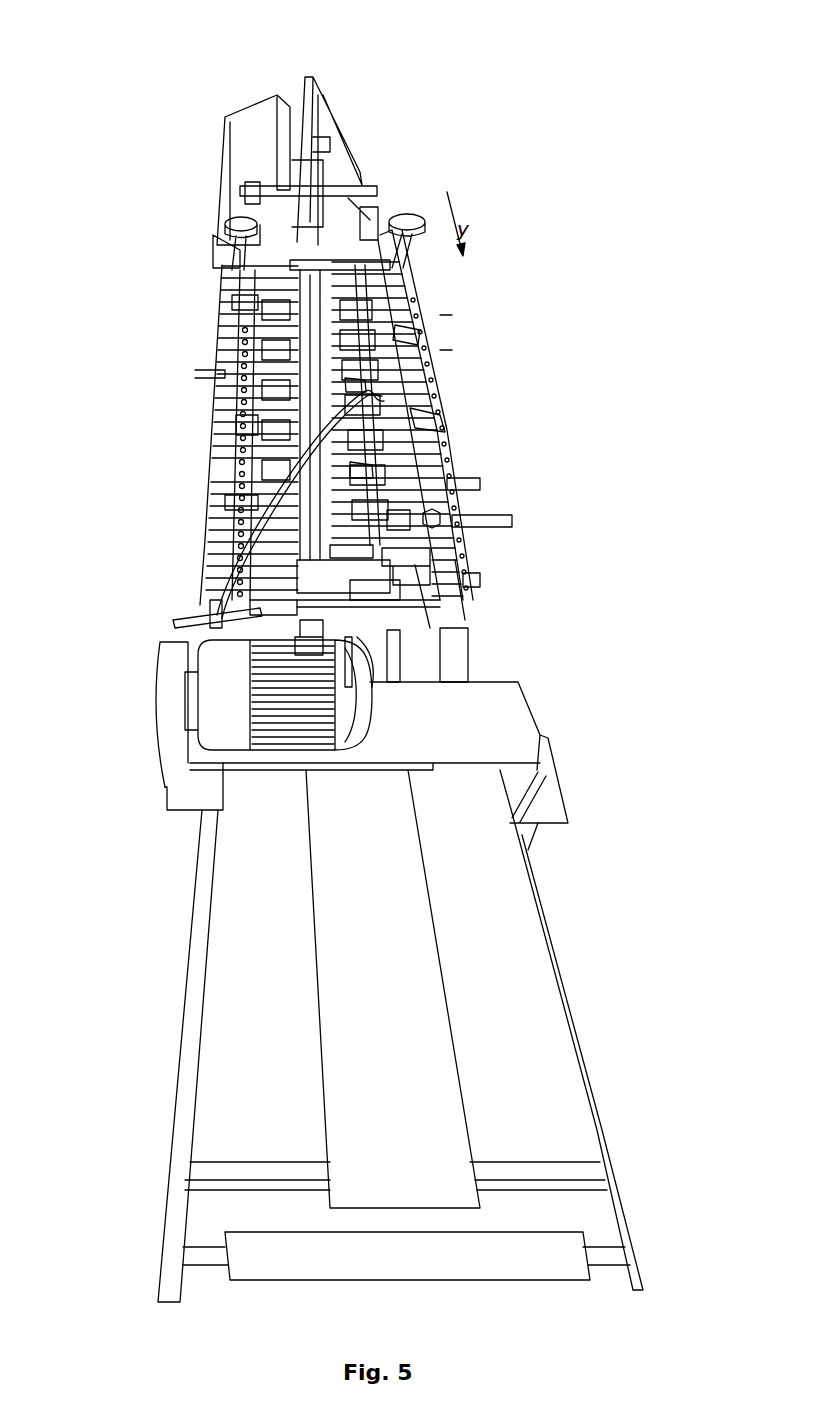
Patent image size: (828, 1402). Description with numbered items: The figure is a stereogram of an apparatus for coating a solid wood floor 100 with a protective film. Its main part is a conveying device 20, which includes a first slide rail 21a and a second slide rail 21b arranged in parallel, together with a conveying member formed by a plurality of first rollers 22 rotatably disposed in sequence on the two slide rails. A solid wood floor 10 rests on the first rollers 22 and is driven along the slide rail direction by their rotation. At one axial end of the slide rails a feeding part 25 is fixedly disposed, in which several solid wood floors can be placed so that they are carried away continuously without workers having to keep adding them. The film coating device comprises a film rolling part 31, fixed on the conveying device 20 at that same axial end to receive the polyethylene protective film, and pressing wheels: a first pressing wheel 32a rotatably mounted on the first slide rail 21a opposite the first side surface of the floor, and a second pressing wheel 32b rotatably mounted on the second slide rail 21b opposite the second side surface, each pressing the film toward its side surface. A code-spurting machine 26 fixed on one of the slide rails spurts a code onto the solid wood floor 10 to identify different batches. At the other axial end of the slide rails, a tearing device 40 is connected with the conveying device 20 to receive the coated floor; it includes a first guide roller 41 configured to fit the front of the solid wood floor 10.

The apparatus for coating a solid wood floor 100 is at (326, 52).
The conveying device 20 is at (176, 354).
The feeding part 25 is at (328, 115).
The film rolling part 31 is at (300, 178).
The second pressing wheel 32b is at (247, 306).
The first pressing wheel 32a is at (420, 338).
The first roller 22 is at (415, 380).
The second slide rail 21b is at (238, 425).
The first slide rail 21a is at (435, 425).
The code-spurting machine 26 is at (240, 461).
The first guide roller 41 is at (235, 690).
The tearing device 40 is at (172, 928).
The solid wood floor 10 is at (368, 905).